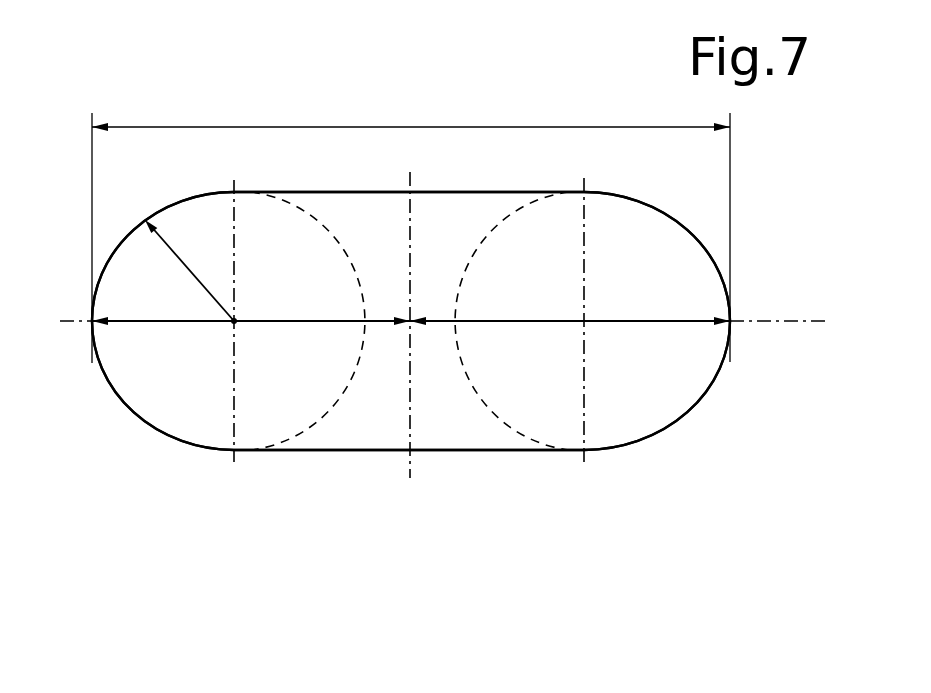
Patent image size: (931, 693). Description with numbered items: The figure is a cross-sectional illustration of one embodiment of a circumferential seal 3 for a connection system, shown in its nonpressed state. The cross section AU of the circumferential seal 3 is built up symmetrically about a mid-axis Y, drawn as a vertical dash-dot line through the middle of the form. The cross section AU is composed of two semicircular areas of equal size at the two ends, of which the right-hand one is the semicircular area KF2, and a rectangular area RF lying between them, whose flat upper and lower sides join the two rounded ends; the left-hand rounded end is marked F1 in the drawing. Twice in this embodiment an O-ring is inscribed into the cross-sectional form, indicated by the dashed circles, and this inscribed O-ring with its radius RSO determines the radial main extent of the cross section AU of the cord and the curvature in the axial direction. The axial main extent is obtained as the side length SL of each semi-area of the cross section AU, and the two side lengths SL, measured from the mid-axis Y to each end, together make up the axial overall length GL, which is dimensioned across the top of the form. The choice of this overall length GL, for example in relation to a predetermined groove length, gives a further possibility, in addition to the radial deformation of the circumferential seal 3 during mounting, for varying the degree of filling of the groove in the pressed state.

The circumferential seal 3 is at (256, 500).
The cross section AU is at (447, 216).
The rectangular area RF is at (455, 440).
The first end face (left semi-elliptical end) F1 is at (129, 382).
The semicircular area KF2 is at (681, 392).
The mid-axis Y is at (407, 322).
The axial overall length GL is at (334, 126).
The side length SL is at (290, 322).
The radius RSO is at (192, 271).